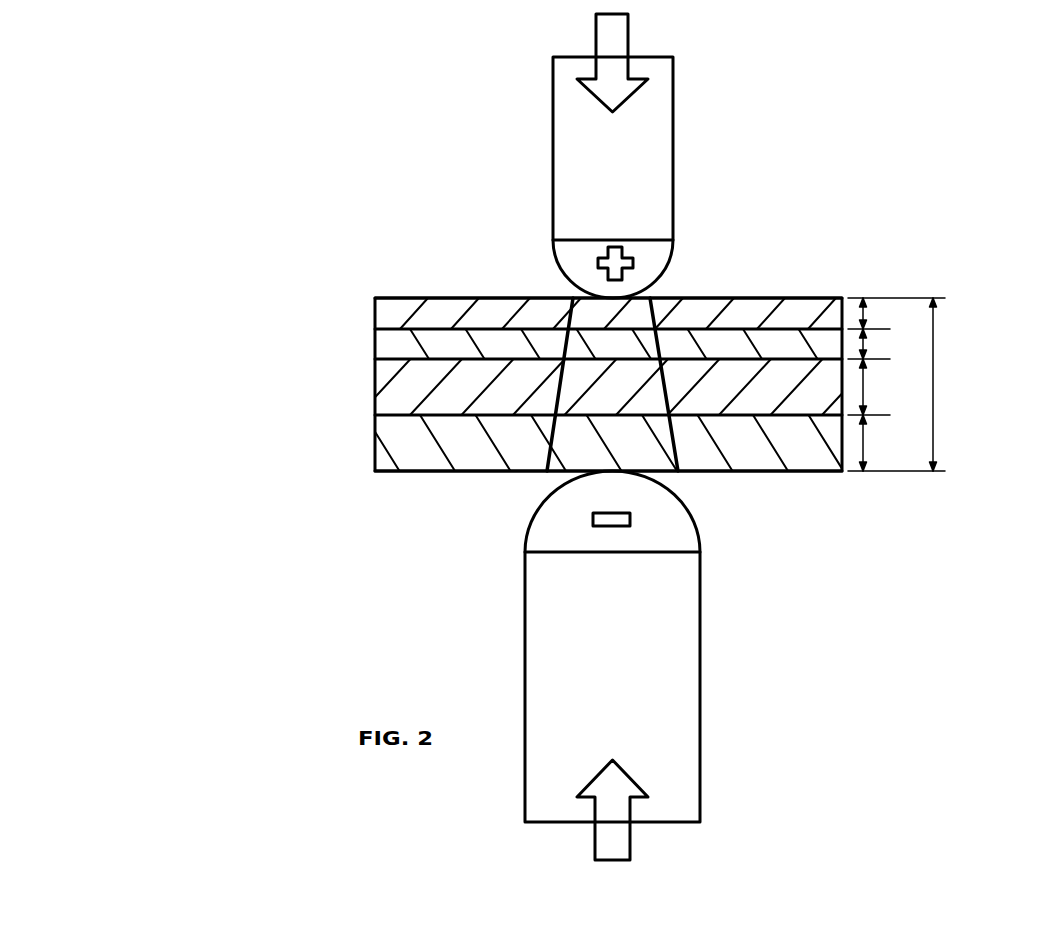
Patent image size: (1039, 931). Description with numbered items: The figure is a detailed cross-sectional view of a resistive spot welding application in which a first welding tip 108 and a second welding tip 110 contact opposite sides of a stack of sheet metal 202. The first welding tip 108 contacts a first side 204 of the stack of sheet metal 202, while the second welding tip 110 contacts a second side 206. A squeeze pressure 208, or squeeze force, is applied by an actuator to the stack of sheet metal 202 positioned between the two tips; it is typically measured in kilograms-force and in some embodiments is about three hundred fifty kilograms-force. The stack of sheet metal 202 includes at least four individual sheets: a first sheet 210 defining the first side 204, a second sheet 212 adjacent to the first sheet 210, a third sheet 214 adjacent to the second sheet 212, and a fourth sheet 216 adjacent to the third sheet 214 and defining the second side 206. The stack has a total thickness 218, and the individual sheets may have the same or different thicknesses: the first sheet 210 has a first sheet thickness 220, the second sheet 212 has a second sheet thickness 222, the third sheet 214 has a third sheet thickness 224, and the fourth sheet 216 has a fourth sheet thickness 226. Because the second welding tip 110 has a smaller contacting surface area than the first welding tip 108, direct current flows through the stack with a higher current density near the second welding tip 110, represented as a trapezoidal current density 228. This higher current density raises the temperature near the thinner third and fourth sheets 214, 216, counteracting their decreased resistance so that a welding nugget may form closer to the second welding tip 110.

The first welding tip 108 is at (682, 667).
The second welding tip 110 is at (655, 155).
The stack of sheet metal 202 is at (317, 298).
The first side 204 is at (713, 471).
The second side 206 is at (705, 298).
The squeeze pressure 208 is at (615, 43).
The first sheet 210 is at (392, 441).
The second sheet 212 is at (392, 388).
The third sheet 214 is at (392, 343).
The fourth sheet 216 is at (392, 312).
The total thickness 218 is at (935, 387).
The first sheet thickness 220 is at (896, 443).
The second sheet thickness 222 is at (879, 387).
The third sheet thickness 224 is at (879, 344).
The fourth sheet thickness 226 is at (896, 313).
The trapezoidal current density 228 is at (568, 340).